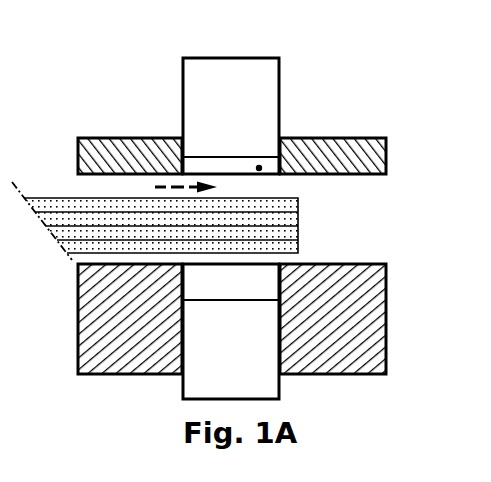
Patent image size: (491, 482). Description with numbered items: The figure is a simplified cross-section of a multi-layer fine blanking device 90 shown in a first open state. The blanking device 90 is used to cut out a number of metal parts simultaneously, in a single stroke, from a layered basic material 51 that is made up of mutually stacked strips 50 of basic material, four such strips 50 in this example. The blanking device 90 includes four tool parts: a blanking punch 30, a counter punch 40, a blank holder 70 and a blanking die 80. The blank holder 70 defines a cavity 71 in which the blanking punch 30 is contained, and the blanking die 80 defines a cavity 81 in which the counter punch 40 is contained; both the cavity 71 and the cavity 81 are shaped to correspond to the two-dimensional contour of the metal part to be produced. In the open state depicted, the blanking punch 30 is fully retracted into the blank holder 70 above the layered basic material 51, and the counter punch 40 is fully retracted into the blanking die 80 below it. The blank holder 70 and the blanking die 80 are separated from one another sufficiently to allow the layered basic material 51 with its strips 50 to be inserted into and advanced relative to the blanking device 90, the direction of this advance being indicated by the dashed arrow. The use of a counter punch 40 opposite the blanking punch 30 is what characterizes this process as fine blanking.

The blanking device 90 is at (242, 43).
The blanking punch 30 is at (188, 82).
The blank holder 70 is at (360, 138).
The cavity 71 is at (259, 168).
The strips of basic material 50 is at (155, 201).
The layered basic material 51 is at (303, 198).
The cavity 81 is at (242, 291).
The counter punch 40 is at (192, 383).
The blanking die 80 is at (368, 335).